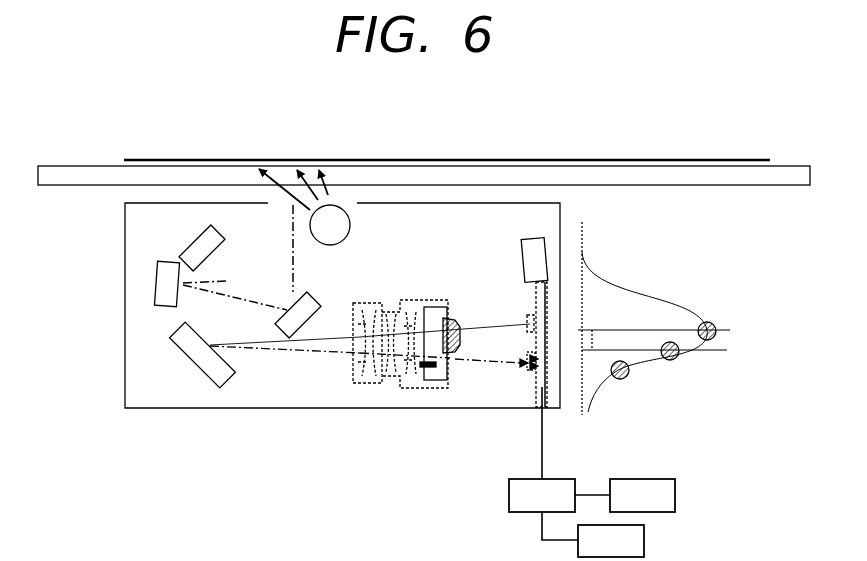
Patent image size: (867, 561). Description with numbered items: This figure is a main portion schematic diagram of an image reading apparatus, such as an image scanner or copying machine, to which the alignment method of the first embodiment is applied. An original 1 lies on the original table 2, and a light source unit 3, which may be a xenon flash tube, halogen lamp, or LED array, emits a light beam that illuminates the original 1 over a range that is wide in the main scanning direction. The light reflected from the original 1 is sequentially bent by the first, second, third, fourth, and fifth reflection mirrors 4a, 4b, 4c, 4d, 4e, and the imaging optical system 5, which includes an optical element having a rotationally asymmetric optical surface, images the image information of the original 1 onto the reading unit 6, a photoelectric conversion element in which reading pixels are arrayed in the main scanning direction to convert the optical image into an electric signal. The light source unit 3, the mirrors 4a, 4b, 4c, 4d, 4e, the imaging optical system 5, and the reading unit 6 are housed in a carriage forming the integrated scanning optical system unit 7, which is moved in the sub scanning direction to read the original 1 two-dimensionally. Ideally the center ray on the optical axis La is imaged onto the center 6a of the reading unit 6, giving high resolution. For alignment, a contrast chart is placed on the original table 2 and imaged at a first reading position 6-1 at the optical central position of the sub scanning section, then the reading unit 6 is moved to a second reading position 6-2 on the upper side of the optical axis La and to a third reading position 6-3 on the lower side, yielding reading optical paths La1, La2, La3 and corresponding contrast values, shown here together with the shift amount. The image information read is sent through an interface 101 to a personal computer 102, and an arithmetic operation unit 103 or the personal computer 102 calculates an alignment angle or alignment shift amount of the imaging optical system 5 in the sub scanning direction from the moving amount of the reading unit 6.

The original 1 is at (255, 159).
The original table 2 is at (70, 165).
The light source unit 3 is at (350, 222).
The first reflection mirror 4a is at (303, 297).
The second reflection mirror 4b is at (158, 284).
The third reflection mirror 4c is at (522, 252).
The fourth reflection mirror 4d is at (197, 240).
The fifth reflection mirror 4e is at (190, 352).
The imaging optical system 5 is at (373, 385).
The reading unit 6 is at (530, 344).
The first reading position 6-1 is at (540, 345).
The second reading position 6-2 is at (526, 321).
The third reading position 6-3 is at (540, 365).
The center of the reading unit 6a is at (706, 353).
The integrated scanning optical system unit 7 is at (527, 203).
The optical axis La is at (300, 353).
The reading optical path La1 is at (462, 354).
The reading optical path La2 is at (475, 327).
The reading optical path La3 is at (483, 367).
The interface 101 is at (559, 509).
The personal computer 102 is at (642, 495).
The arithmetic operation unit 103 is at (611, 541).